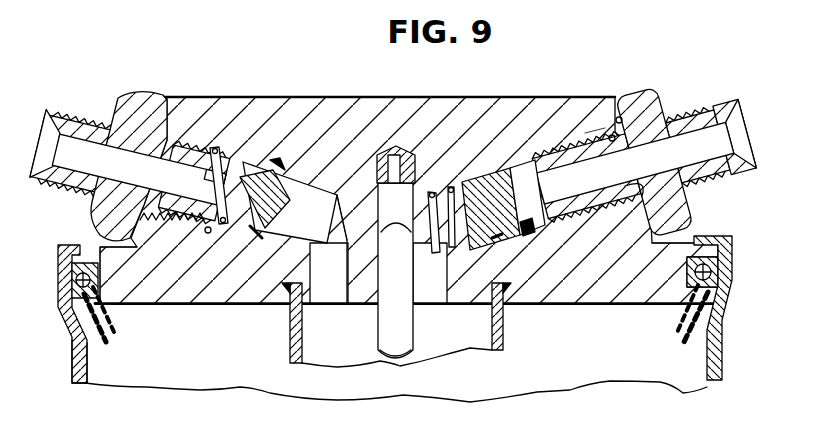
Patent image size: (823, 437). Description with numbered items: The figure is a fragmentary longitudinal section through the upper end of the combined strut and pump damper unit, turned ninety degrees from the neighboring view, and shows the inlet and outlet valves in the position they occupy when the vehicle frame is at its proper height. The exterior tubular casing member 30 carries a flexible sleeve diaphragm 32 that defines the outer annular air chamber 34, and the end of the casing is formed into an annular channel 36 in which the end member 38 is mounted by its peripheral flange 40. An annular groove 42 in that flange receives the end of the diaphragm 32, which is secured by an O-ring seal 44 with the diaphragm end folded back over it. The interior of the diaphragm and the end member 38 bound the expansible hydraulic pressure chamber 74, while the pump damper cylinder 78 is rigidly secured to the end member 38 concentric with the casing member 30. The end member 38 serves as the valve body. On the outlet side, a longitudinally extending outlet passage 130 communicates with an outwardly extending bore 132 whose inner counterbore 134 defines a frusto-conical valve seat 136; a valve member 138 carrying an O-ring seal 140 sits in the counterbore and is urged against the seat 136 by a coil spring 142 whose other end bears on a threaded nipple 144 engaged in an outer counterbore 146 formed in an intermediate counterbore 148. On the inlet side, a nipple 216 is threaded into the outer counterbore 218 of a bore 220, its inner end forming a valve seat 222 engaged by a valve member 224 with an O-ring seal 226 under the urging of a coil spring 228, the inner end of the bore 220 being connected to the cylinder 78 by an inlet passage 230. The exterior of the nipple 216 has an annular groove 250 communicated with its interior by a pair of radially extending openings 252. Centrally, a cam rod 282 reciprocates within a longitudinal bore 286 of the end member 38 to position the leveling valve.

The casing member 30 is at (720, 364).
The sleeve diaphragm 32 is at (106, 328).
The outer annular air chamber 34 is at (88, 365).
The annular channel 36 is at (60, 276).
The end member 38 is at (462, 113).
The peripheral flange 40 is at (110, 263).
The annular groove 42 is at (143, 307).
The O-ring seal 44 is at (80, 284).
The hydraulic pressure chamber 74 is at (243, 360).
The cylinder 78 is at (447, 347).
The outlet passage 130 is at (320, 307).
The bore 132 is at (340, 177).
The inner counterbore 134 is at (280, 168).
The valve seat 136 is at (260, 233).
The valve member 138 is at (289, 205).
The O-ring seal 140 is at (290, 183).
The coil spring 142 is at (240, 150).
The threaded nipple 144 is at (137, 112).
The outer counterbore 146 is at (160, 230).
The intermediate counterbore 148 is at (210, 233).
The nipple 216 is at (642, 125).
The outer counterbore 218 is at (573, 143).
The bore 220 is at (463, 178).
The valve seat 222 is at (513, 187).
The valve member 224 is at (500, 233).
The O-ring seal 226 is at (527, 227).
The coil spring 228 is at (440, 190).
The inlet passage 230 is at (450, 290).
The annular groove 250 is at (612, 140).
The radially extending openings 252 is at (633, 192).
The cam rod 282 is at (395, 347).
The longitudinal bore 286 is at (388, 253).